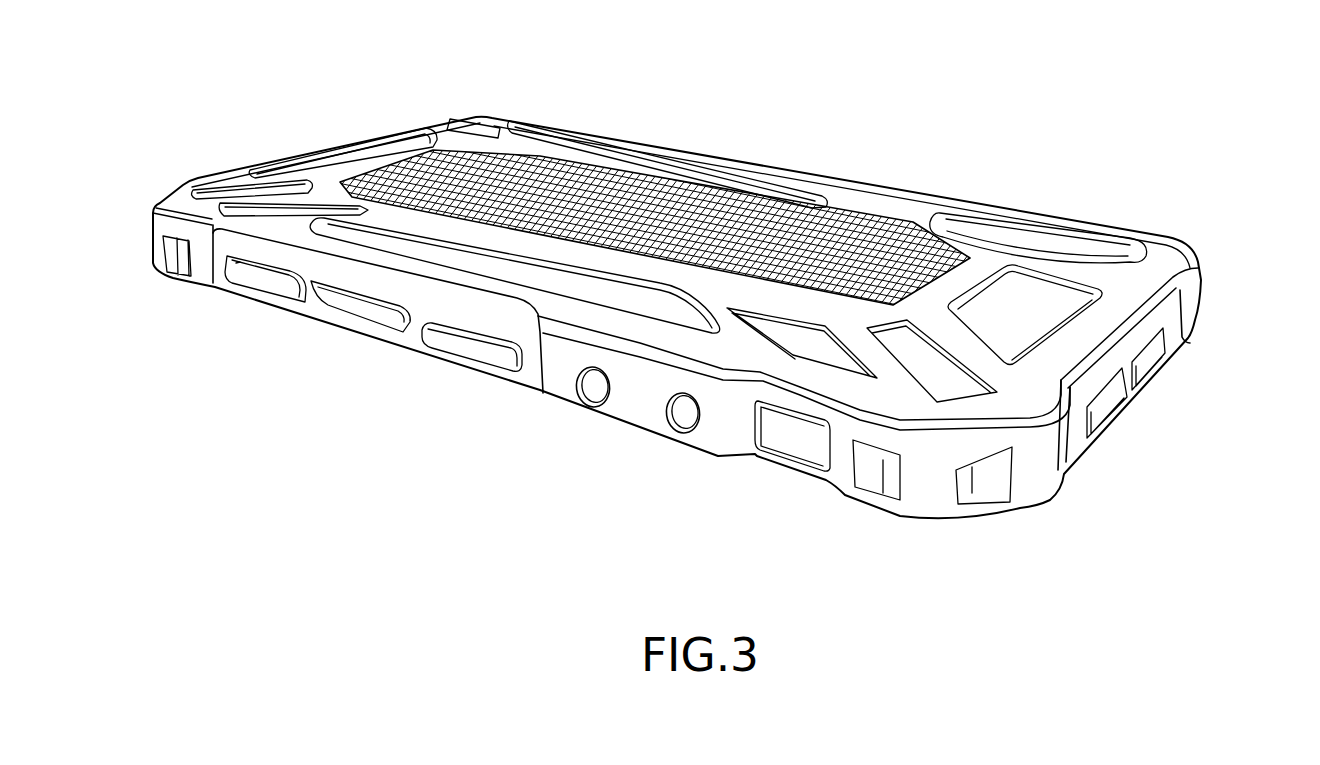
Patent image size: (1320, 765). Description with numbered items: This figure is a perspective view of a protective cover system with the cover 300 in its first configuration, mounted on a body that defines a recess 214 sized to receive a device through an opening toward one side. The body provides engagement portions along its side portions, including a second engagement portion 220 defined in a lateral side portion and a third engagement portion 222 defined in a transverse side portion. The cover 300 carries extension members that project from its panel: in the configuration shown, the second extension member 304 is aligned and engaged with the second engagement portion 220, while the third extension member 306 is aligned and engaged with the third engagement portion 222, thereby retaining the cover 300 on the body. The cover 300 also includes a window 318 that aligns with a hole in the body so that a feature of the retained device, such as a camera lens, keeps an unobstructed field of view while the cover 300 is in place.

The cover 300 is at (963, 160).
The window 318 is at (1055, 227).
The third extension member 306 is at (1167, 331).
The third engagement portion 222 is at (1077, 483).
The second engagement portion 220 is at (535, 408).
The second extension member 304 is at (238, 263).
The recess 214 is at (611, 428).